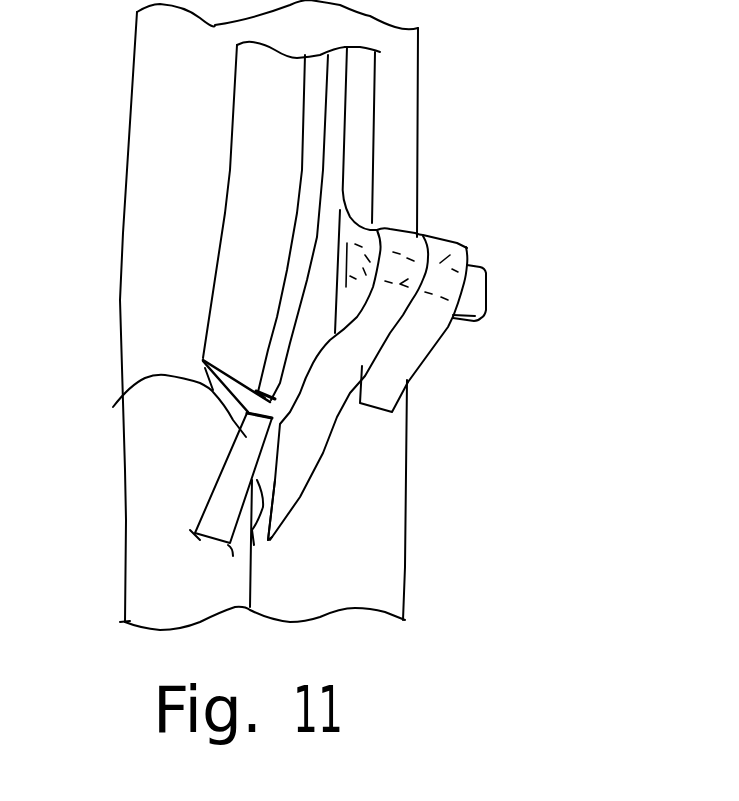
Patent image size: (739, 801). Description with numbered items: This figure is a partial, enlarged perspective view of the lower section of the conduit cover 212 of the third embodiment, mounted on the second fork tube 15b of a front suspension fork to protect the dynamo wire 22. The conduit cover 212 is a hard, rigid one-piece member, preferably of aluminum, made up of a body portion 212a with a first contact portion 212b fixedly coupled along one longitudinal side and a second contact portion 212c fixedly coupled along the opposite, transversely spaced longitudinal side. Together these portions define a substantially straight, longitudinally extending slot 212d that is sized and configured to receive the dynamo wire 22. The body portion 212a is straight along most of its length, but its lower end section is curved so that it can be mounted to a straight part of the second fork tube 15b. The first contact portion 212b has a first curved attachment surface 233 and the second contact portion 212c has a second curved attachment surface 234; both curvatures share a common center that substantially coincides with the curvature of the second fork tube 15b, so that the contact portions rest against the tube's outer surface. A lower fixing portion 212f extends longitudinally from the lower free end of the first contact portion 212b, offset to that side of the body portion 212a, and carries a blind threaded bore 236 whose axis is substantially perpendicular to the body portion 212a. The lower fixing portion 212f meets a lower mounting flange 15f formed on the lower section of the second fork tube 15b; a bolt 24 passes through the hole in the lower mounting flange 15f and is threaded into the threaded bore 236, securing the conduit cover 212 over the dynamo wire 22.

The second fork tube 15b is at (420, 112).
The lower mounting flange 15f is at (430, 332).
The dynamo wire 22 is at (215, 485).
The bolt 24 is at (486, 283).
The conduit cover 212 is at (372, 95).
The body portion 212a is at (323, 163).
The first contact portion 212b is at (307, 460).
The second contact portion 212c is at (232, 322).
The longitudinally extending slot 212d is at (246, 433).
The lower fixing portion 212f is at (349, 354).
The first curved attachment surface 233 is at (268, 541).
The second curved attachment surface 234 is at (215, 398).
The threaded bore 236 is at (462, 237).